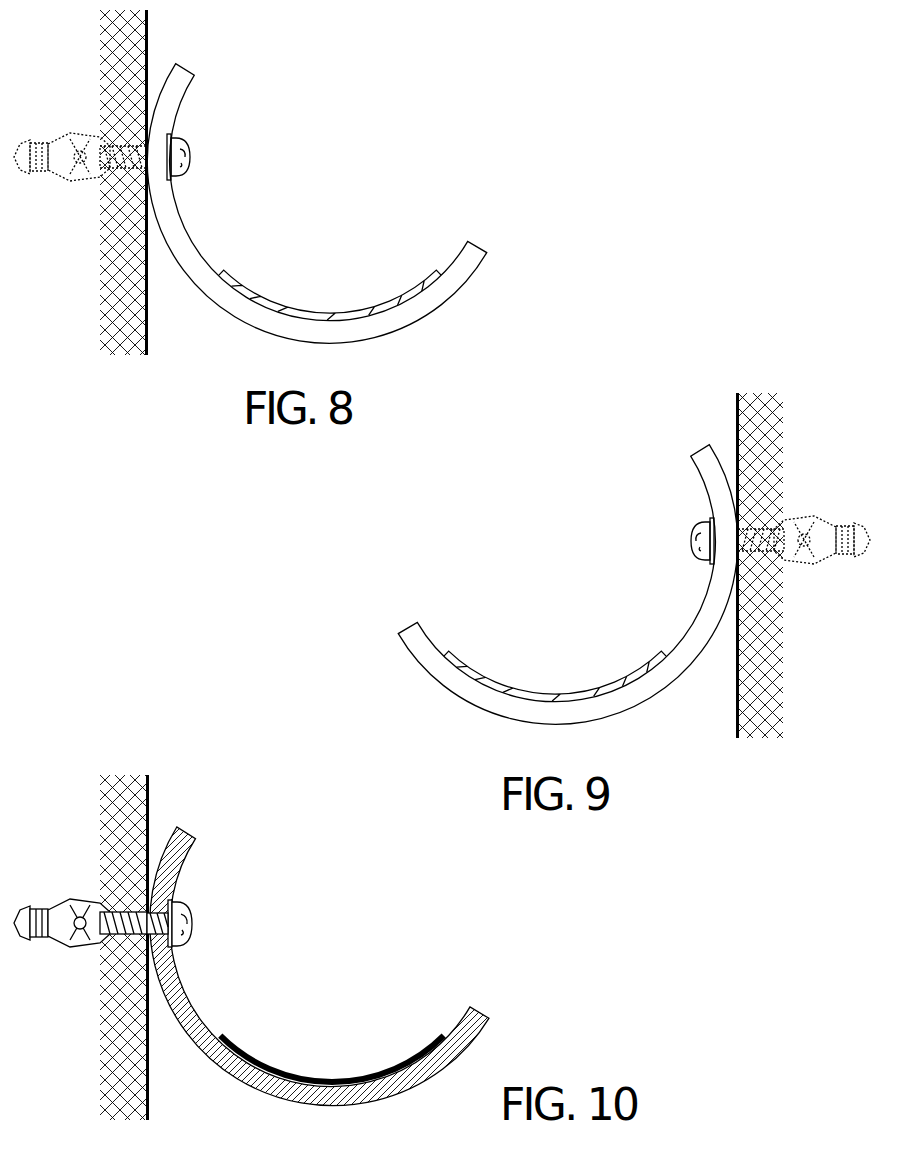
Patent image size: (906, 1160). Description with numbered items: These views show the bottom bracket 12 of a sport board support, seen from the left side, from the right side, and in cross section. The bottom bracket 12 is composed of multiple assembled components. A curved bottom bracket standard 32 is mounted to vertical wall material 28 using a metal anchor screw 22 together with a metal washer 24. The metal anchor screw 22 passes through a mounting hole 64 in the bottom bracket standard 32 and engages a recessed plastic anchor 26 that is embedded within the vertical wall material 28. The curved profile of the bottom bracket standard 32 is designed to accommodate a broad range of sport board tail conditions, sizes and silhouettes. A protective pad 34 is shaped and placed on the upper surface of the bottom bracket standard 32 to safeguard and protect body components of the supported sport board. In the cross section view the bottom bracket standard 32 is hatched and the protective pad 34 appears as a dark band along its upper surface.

In FIG. 8, the right bottom bracket 12 is at (300, 175).
In FIG. 9, the right bottom bracket 12 is at (583, 555).
In FIG. 10, the right bottom bracket 12 is at (320, 963).
In FIG. 8, the metal anchor screw 22 is at (188, 160).
In FIG. 9, the metal anchor screw 22 is at (694, 540).
In FIG. 10, the metal anchor screw 22 is at (193, 925).
In FIG. 8, the metal washer 24 is at (171, 136).
In FIG. 9, the metal washer 24 is at (712, 518).
In FIG. 10, the metal washer 24 is at (172, 905).
In FIG. 8, the recessed plastic anchor 26 is at (90, 138).
In FIG. 9, the recessed plastic anchor 26 is at (795, 520).
In FIG. 10, the recessed plastic anchor 26 is at (100, 900).
In FIG. 8, the vertical wall material 28 is at (148, 62).
In FIG. 9, the vertical wall material 28 is at (737, 433).
In FIG. 10, the vertical wall material 28 is at (148, 806).
In FIG. 8, the bottom bracket standard 32 is at (185, 230).
In FIG. 9, the bottom bracket standard 32 is at (700, 612).
In FIG. 10, the bottom bracket standard 32 is at (187, 995).
In FIG. 8, the protective pad 34 is at (238, 285).
In FIG. 9, the protective pad 34 is at (650, 664).
In FIG. 10, the protective pad 34 is at (240, 1048).
In FIG. 10, the mounting hole 64 is at (147, 945).